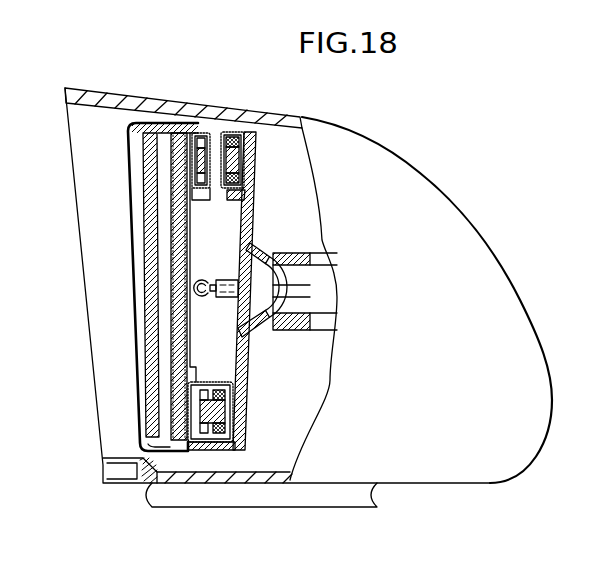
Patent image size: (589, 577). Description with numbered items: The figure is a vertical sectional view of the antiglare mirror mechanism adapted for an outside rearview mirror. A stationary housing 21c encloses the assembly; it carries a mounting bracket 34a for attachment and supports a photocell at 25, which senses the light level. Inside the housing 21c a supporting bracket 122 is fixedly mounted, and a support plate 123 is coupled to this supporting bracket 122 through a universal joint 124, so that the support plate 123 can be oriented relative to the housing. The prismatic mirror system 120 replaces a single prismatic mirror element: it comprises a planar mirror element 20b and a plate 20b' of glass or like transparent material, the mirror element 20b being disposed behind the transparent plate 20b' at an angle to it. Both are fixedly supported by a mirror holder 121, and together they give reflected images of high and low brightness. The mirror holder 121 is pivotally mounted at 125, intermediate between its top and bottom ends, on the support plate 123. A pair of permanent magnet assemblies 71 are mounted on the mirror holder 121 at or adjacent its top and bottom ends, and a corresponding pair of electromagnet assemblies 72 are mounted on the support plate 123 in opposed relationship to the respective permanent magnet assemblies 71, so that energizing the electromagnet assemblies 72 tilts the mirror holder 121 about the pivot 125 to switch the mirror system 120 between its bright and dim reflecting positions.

The stationary housing 21c is at (407, 190).
The mounting bracket 34a is at (317, 497).
The photocell 25 is at (103, 467).
The mirror holder 121 is at (158, 122).
The prismatic mirror system 120 is at (140, 203).
The planar mirror element 20b is at (93, 260).
The transparent plate 20b' is at (87, 315).
The support plate 123 is at (243, 403).
The permanent magnet assemblies 71 is at (203, 132).
The electromagnet assemblies 72 is at (233, 132).
The pivot 125 is at (205, 278).
The universal joint 124 is at (266, 250).
The supporting bracket 122 is at (323, 332).